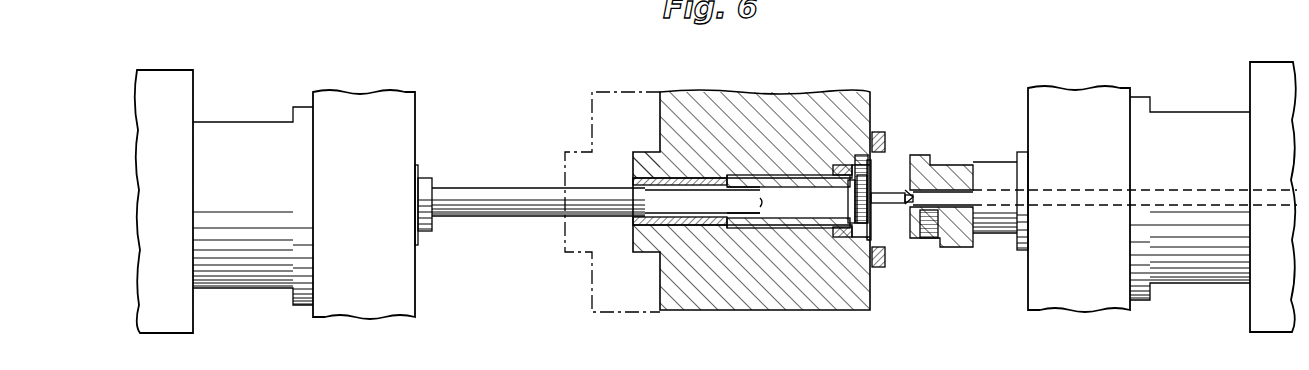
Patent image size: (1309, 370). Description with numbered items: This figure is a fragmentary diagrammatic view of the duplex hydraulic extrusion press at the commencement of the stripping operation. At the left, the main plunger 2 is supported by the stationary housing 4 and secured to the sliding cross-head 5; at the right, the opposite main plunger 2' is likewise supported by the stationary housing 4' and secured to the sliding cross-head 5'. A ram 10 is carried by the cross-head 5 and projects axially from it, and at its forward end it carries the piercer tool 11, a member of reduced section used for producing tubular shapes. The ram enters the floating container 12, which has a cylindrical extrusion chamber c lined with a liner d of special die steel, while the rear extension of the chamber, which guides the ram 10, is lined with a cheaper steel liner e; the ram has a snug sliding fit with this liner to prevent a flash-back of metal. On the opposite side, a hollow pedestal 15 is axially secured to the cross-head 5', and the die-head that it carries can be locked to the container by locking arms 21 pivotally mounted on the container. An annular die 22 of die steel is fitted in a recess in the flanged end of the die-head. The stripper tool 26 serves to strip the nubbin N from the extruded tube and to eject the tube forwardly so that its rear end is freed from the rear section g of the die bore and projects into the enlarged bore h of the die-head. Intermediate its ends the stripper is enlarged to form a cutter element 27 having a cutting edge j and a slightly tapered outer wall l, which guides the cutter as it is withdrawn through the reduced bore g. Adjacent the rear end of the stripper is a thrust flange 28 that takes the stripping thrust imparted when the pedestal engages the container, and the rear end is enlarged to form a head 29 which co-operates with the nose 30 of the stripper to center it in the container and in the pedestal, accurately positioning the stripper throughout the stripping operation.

The main plunger 2 is at (253, 196).
The stationary housing 4 is at (164, 186).
The sliding cross-head 5 is at (372, 184).
The ram 10 is at (471, 205).
The piercer tool 11 is at (680, 205).
The floating container 12 is at (686, 108).
The hollow pedestal 15 is at (983, 165).
The locking arm 21 is at (880, 130).
The annular die 22 is at (925, 215).
The stripper tool 26 is at (871, 213).
The cutter element 27 is at (872, 195).
The thrust flange 28 is at (863, 232).
The head 29 is at (848, 200).
The nose 30 is at (932, 238).
The liner e is at (660, 180).
The liner d is at (750, 222).
The extrusion chamber c is at (773, 207).
The tapered outer wall l is at (885, 195).
The nubbin N is at (907, 195).
The rear section of the bore g is at (930, 178).
The cutting edge j is at (909, 210).
The enlarged bore h is at (945, 240).
The sliding cross-head 5' is at (1073, 186).
The main plunger 2' is at (1190, 189).
The stationary housing 4' is at (1273, 182).